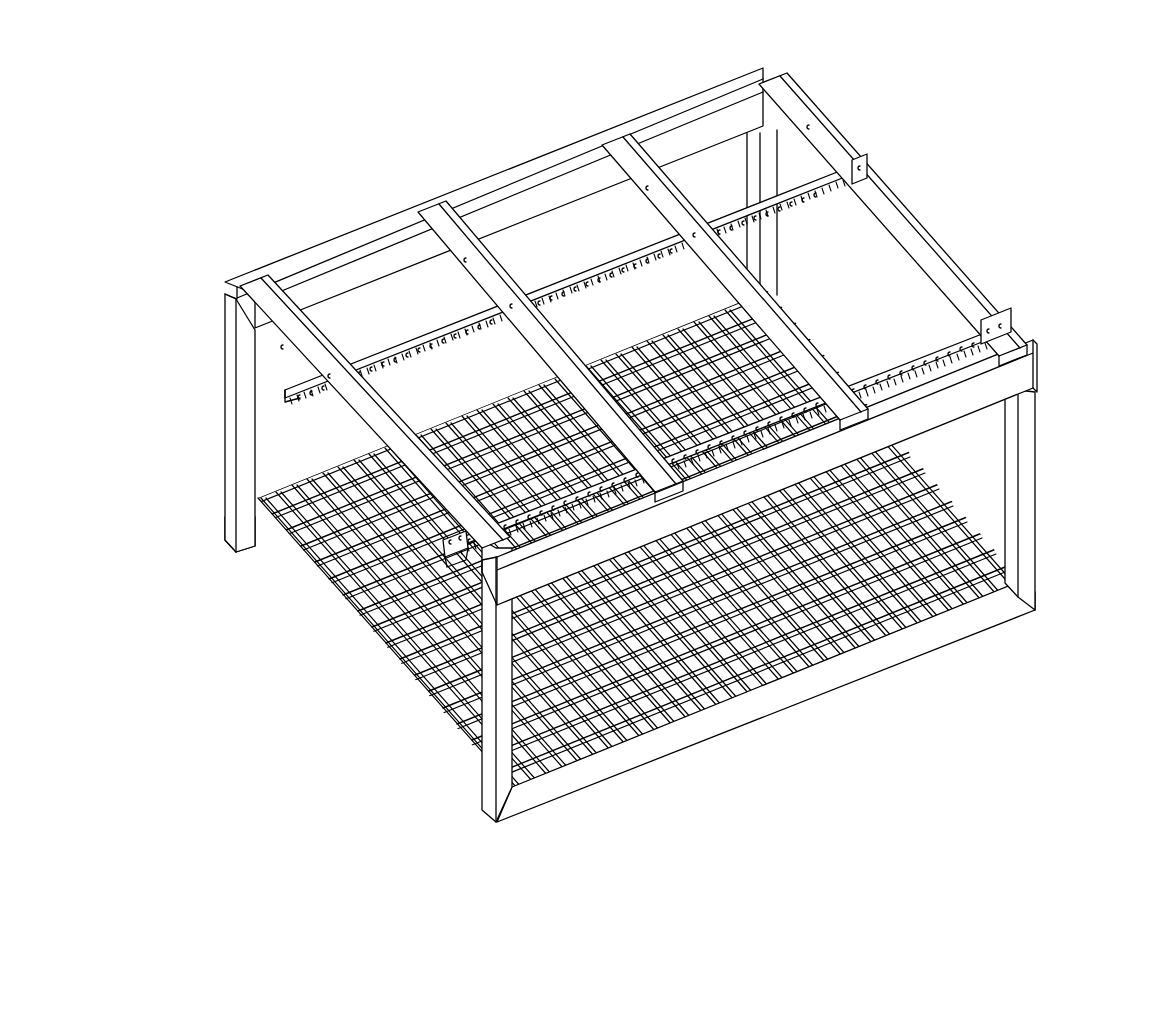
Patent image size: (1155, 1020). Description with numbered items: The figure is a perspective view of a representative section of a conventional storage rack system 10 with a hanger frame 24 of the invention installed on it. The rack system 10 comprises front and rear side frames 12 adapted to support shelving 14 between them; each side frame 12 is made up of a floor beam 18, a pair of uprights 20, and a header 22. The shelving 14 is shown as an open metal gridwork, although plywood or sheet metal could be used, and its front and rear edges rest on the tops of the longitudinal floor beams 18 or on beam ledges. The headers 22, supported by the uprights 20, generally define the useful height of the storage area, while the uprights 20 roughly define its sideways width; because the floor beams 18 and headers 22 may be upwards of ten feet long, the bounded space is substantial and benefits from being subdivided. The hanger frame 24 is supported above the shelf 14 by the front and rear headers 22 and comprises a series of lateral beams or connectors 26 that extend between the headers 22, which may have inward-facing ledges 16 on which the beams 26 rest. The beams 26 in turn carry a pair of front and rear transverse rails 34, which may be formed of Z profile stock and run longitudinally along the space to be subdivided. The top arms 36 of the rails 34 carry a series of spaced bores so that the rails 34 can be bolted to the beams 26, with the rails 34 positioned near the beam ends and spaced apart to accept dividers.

The rack system 10 is at (635, 445).
The side frame 12 is at (630, 445).
The shelving 14 is at (378, 636).
The inward-facing ledge 16 is at (650, 132).
The floor beam 18 is at (247, 546).
The upright 20 is at (233, 458).
The header 22 is at (327, 243).
The hanger frame 24 is at (633, 320).
The lateral beam 26 is at (385, 420).
The rail 34 is at (383, 348).
The top arm 36 is at (988, 320).